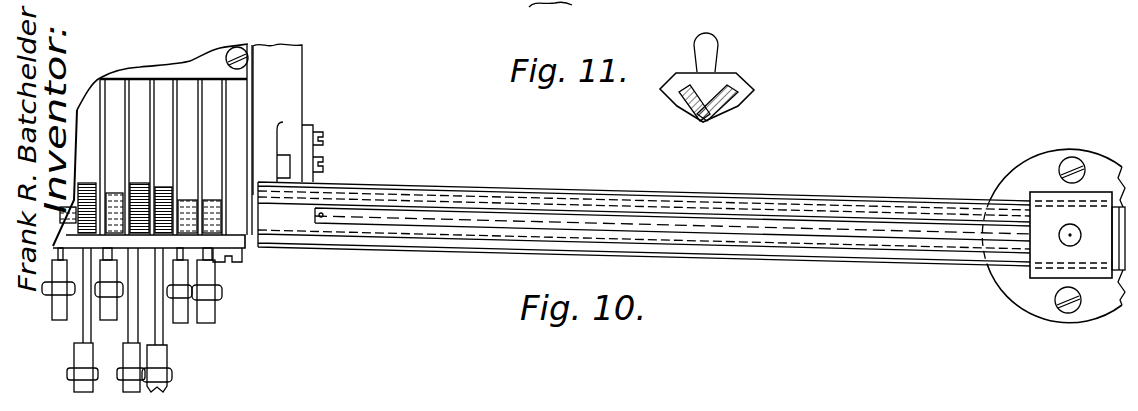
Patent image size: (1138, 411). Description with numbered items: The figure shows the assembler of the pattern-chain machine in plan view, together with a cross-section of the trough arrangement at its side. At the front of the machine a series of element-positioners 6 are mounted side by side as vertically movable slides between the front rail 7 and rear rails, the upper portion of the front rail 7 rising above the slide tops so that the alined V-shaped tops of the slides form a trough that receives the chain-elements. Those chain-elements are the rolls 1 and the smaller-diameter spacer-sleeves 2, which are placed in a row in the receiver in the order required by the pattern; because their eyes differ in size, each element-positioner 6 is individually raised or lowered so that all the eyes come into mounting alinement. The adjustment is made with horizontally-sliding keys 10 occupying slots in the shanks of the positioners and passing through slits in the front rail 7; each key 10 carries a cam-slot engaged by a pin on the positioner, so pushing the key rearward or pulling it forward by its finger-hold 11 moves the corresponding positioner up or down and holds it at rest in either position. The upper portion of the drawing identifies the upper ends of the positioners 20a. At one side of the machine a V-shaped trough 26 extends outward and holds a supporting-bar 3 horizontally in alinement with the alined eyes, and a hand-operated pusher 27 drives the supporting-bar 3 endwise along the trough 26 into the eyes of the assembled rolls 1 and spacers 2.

In FIG. 10, the column bar top 20a is at (160, 88).
In FIG. 10, the element-positioner 6 is at (113, 183).
In FIG. 10, the roll 1 is at (88, 193).
In FIG. 10, the spacer-sleeve 2 is at (110, 200).
In FIG. 10, the front rail 7 is at (213, 245).
In FIG. 10, the key 10 is at (57, 252).
In FIG. 10, the finger-hold 11 is at (43, 290).
In FIG. 10, the V-shaped trough 26 is at (513, 188).
In FIG. 11, the V-shaped trough 26 is at (717, 115).
In FIG. 10, the supporting-bar 3 is at (768, 222).
In FIG. 10, the pusher 27 is at (1030, 192).
In FIG. 11, the pusher 27 is at (730, 73).